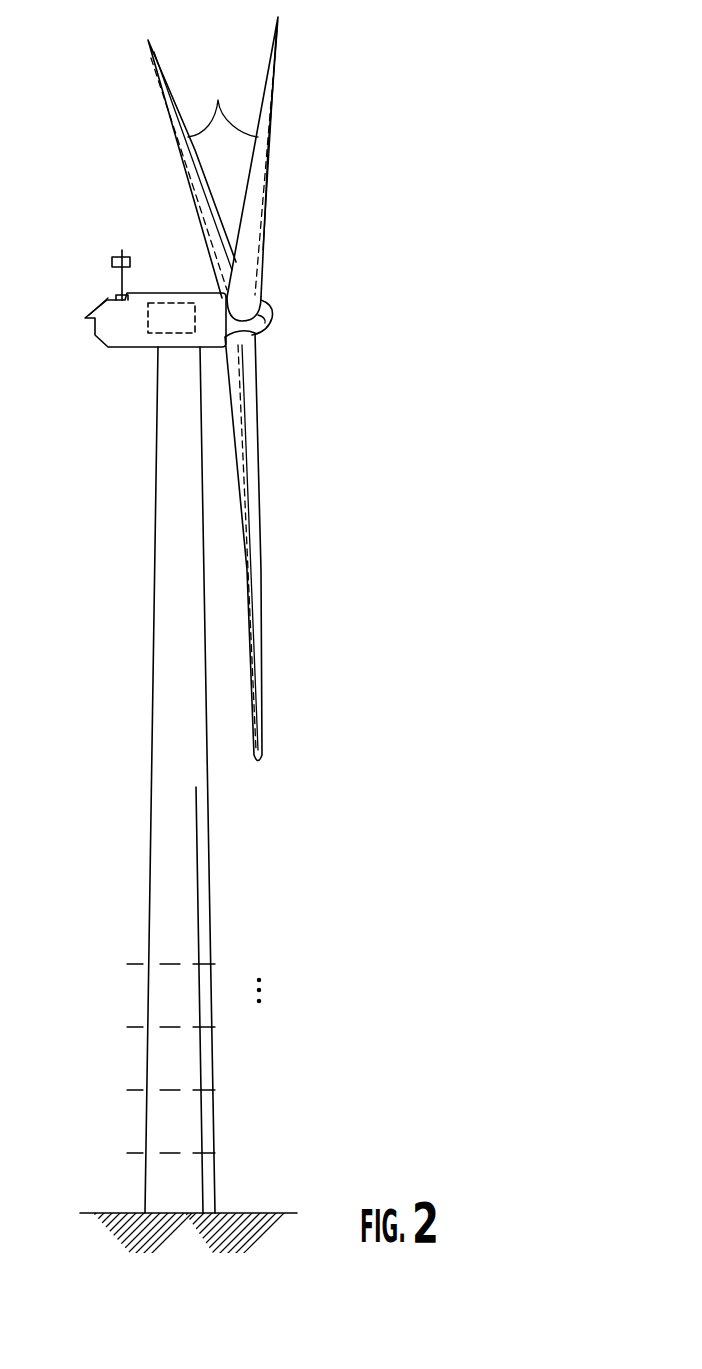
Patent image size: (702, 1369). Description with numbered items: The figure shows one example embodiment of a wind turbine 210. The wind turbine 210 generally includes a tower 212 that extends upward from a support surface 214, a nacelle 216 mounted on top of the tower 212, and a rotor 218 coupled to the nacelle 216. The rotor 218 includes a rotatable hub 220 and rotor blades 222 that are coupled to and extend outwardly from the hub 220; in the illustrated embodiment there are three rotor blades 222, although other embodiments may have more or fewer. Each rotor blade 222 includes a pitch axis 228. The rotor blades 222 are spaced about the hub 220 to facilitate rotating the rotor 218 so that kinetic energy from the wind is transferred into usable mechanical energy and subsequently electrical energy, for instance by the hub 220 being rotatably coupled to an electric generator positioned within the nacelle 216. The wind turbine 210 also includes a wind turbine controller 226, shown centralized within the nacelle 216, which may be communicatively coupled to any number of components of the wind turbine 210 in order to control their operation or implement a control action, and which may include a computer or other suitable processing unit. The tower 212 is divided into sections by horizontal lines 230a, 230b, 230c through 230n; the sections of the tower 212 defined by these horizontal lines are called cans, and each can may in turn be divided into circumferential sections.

The wind turbine 210 is at (464, 130).
The tower 212 is at (163, 899).
The support surface 214 is at (117, 1213).
The nacelle 216 is at (135, 349).
The rotor 218 is at (326, 245).
The hub 220 is at (270, 315).
The rotor blade 222 is at (218, 98).
The wind turbine controller 226 is at (167, 300).
The pitch axis 228 is at (192, 180).
The horizontal line 230a is at (207, 1153).
The horizontal line 230b is at (207, 1090).
The horizontal line 230c is at (205, 1027).
The horizontal line 230n is at (208, 963).